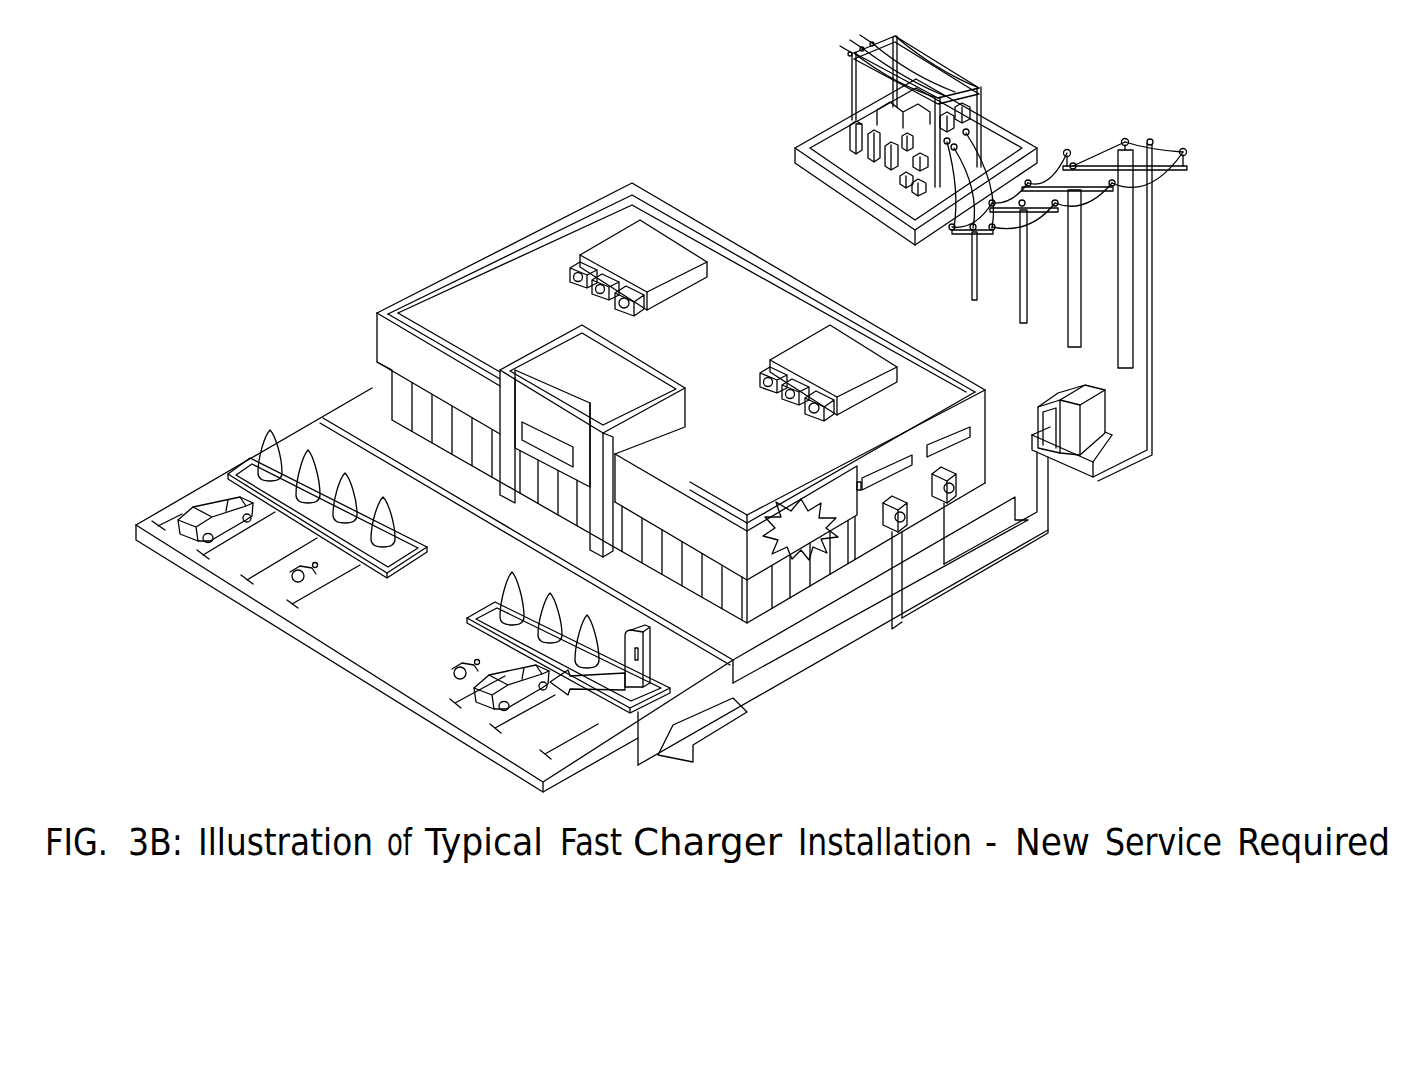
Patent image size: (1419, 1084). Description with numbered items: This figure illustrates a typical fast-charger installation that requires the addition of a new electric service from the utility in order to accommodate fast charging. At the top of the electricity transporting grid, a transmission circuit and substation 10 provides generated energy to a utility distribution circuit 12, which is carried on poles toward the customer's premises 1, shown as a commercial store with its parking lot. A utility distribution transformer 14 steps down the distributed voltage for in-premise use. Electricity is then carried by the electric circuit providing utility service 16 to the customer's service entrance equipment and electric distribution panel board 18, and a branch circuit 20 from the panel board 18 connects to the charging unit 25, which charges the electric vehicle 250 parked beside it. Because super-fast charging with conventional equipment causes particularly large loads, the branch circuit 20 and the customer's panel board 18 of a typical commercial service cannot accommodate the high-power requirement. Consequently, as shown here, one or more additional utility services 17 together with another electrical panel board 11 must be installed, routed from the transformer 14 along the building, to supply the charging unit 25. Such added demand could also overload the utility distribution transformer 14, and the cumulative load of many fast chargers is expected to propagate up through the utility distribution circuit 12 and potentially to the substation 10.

The customer's premises 1 is at (567, 210).
The transmission circuit and substation 10 is at (842, 60).
The additional electrical panel board 11 is at (896, 492).
The utility distribution circuit 12 is at (1078, 150).
The utility distribution transformer 14 is at (1040, 418).
The utility service 16 is at (1033, 532).
The additional utility service 17 is at (1003, 565).
The customer's electric distribution panel board 18 is at (947, 466).
The branch circuit 20 is at (852, 646).
The charging unit 25 is at (548, 682).
The electric vehicle 250 is at (625, 640).